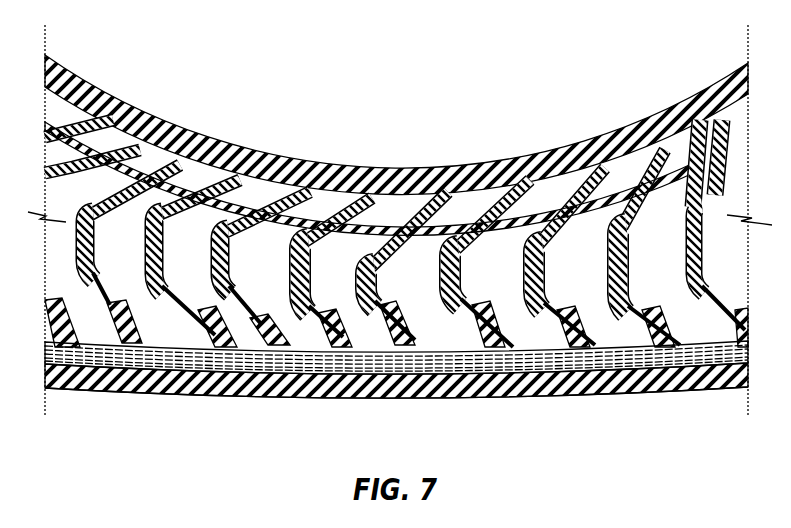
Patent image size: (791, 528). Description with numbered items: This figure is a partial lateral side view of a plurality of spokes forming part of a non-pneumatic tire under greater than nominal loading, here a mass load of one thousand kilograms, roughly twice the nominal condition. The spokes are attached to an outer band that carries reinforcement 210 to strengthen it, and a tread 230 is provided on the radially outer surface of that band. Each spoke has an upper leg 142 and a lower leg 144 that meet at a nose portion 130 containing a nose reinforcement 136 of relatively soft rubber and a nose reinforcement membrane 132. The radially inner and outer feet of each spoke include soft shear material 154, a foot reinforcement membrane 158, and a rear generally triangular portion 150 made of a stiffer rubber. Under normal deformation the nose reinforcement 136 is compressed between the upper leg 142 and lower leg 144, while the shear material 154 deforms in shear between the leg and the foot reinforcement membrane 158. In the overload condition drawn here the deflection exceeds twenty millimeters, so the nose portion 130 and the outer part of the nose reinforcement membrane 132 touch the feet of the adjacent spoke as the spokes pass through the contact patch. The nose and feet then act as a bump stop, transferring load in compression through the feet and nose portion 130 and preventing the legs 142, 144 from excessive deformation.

The nose portion 130 is at (163, 243).
The nose reinforcement membrane 132 is at (205, 175).
The nose reinforcement 136 is at (238, 245).
The upper leg 142 is at (330, 172).
The lower leg 144 is at (345, 372).
The rear generally triangular portion 150 is at (378, 170).
The shear material 154 is at (415, 352).
The foot reinforcement membrane 158 is at (402, 176).
The reinforcement 210 is at (568, 372).
The tread 230 is at (630, 389).